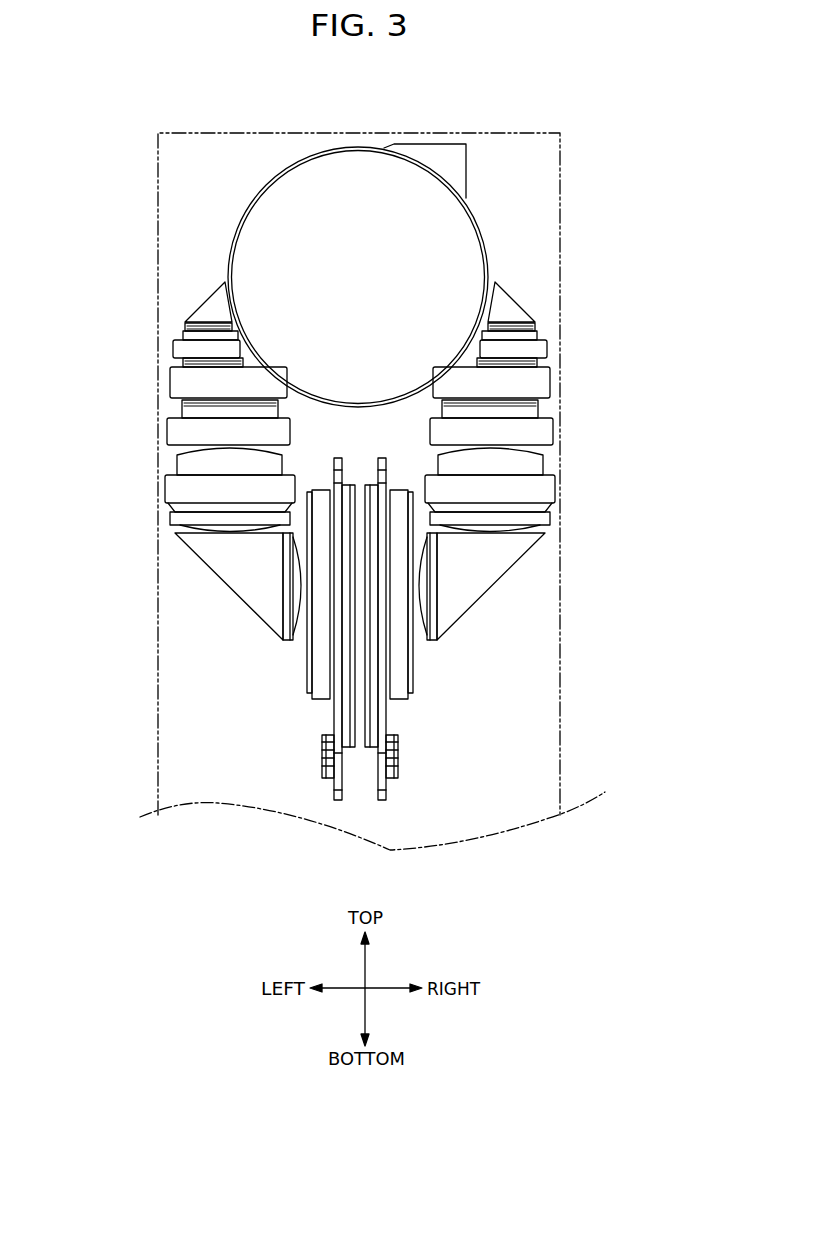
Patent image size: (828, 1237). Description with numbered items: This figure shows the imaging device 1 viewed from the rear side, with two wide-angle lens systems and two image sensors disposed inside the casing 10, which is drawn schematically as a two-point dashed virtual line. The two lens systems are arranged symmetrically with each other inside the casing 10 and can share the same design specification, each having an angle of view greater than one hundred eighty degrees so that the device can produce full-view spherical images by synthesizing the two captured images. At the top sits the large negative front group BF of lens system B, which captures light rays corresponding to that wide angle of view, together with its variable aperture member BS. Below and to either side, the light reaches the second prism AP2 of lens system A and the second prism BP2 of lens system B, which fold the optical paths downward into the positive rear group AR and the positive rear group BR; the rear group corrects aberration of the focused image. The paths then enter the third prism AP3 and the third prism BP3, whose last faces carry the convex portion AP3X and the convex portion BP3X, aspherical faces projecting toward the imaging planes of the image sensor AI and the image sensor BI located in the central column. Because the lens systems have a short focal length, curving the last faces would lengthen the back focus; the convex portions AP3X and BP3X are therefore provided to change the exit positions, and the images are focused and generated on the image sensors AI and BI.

The imaging device 1 is at (598, 115).
The casing 10 is at (235, 131).
The variable aperture member BS is at (447, 155).
The negative front group BF is at (467, 246).
The second prism AP2 is at (215, 312).
The second prism BP2 is at (503, 312).
The positive rear group AR is at (182, 386).
The positive rear group BR is at (517, 383).
The third prism AP3 is at (220, 560).
The third prism BP3 is at (505, 555).
The convex portion AP3X is at (298, 627).
The convex portion BP3X is at (422, 627).
The image sensor AI is at (305, 690).
The image sensor BI is at (415, 690).